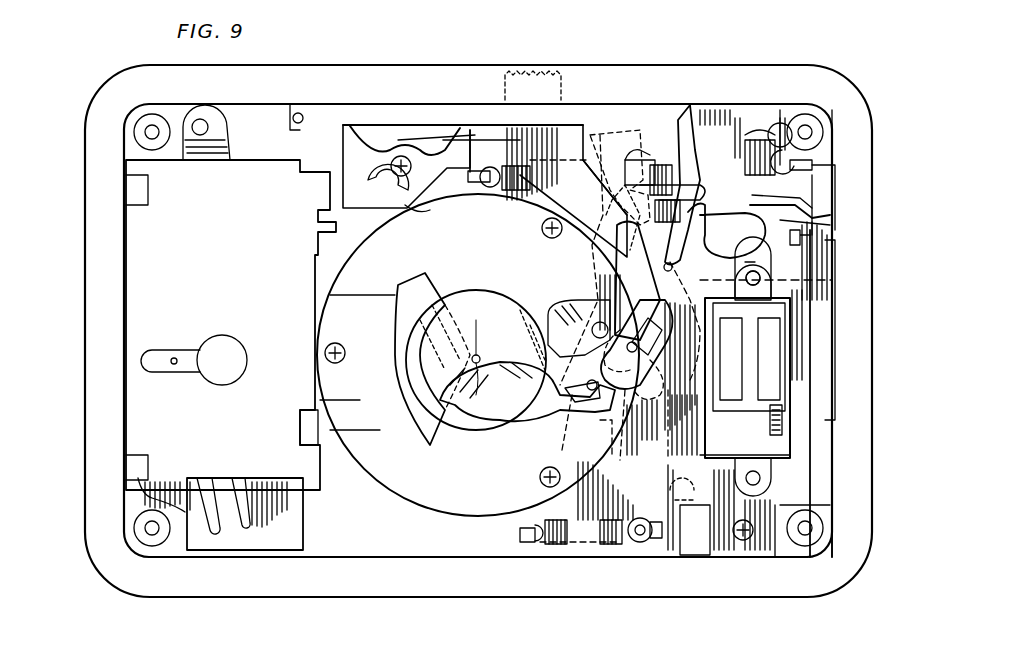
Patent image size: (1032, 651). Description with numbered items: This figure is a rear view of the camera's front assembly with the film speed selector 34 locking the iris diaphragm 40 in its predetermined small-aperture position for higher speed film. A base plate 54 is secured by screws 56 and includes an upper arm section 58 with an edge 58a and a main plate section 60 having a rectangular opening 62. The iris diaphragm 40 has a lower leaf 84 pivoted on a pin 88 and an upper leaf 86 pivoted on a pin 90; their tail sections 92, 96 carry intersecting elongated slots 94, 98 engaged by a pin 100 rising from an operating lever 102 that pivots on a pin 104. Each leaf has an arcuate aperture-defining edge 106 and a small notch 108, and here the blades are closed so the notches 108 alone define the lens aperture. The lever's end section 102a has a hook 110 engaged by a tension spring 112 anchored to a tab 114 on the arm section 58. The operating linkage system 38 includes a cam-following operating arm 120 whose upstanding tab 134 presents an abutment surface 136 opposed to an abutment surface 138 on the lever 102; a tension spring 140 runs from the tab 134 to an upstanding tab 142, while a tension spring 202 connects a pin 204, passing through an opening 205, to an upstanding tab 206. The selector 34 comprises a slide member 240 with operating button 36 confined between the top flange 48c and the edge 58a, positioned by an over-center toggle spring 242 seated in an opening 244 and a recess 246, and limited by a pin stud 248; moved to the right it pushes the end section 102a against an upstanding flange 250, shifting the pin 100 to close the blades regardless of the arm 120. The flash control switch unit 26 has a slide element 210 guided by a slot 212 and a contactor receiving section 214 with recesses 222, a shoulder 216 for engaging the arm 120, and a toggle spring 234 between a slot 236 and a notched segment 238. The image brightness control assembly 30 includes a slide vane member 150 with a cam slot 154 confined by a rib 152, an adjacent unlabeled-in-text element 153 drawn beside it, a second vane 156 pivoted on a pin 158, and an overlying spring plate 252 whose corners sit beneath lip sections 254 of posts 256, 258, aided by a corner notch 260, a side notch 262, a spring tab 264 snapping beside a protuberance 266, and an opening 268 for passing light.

The flash control switch unit 26 is at (862, 310).
The image brightness control assembly 30 is at (122, 148).
The film speed selector 34 is at (640, 158).
The operating button 36 is at (535, 72).
The operating linkage system 38 is at (612, 235).
The iris diaphragm 40 is at (395, 328).
The top flange 48c is at (790, 145).
The base plate 54 is at (635, 128).
The screws 56 is at (392, 158).
The upper arm section 58 is at (478, 168).
The edge of arm section 58a is at (470, 165).
The main plate section 60 is at (820, 342).
The rectangular opening 62 is at (770, 440).
The lower leaf 84 is at (482, 420).
The upper leaf 86 is at (472, 300).
The pin 88 is at (590, 320).
The pin 90 is at (575, 405).
The tail section 92 is at (635, 425).
The elongated slot 94 is at (681, 425).
The tail section 96 is at (645, 300).
The elongated slot 98 is at (639, 361).
The pin 100 is at (606, 432).
The operating lever 102 is at (700, 268).
The end section 102a is at (700, 105).
The pin 104 is at (639, 228).
The arcuate aperture-defining edge 106 is at (458, 275).
The notch 108 is at (481, 361).
The hook 110 is at (759, 226).
The tension spring 112 is at (560, 130).
The tab 114 is at (490, 125).
The cam-following operating arm 120 is at (590, 460).
The upstanding tab 134 is at (640, 150).
The abutment surface 136 is at (660, 162).
The abutment surface 138 is at (700, 180).
The tension spring 140 is at (830, 105).
The upstanding tab 142 is at (812, 165).
The slide vane member 150 is at (285, 548).
The rib 152 is at (310, 412).
The terminal 153 is at (250, 535).
The cam slot 154 is at (210, 540).
The second vane 156 is at (225, 148).
The pin 158 is at (150, 115).
The tension spring 202 is at (560, 548).
The pin 204 is at (636, 540).
The opening 205 is at (658, 542).
The upstanding tab 206 is at (518, 538).
The slide element 210 is at (830, 462).
The slot 212 is at (840, 282).
The contactor receiving section 214 is at (785, 400).
The shoulder 216 is at (712, 395).
The elongated recesses 222 is at (735, 378).
The toggle spring 234 is at (830, 215).
The slot 236 is at (805, 240).
The notched segment 238 is at (825, 208).
The slide member 240 is at (705, 110).
The over-center toggle spring 242 is at (372, 175).
The opening 244 is at (412, 208).
The recess 246 is at (443, 135).
The pin stud 248 is at (296, 112).
The upstanding flange 250 is at (760, 130).
The spring plate 252 is at (135, 228).
The lip sections 254 is at (145, 188).
The posts 256 is at (128, 180).
The posts 258 is at (325, 205).
The corner notch 260 is at (325, 168).
The side notch 262 is at (305, 425).
The spring tab 264 is at (330, 225).
The protuberance 266 is at (318, 240).
The opening 268 is at (222, 335).